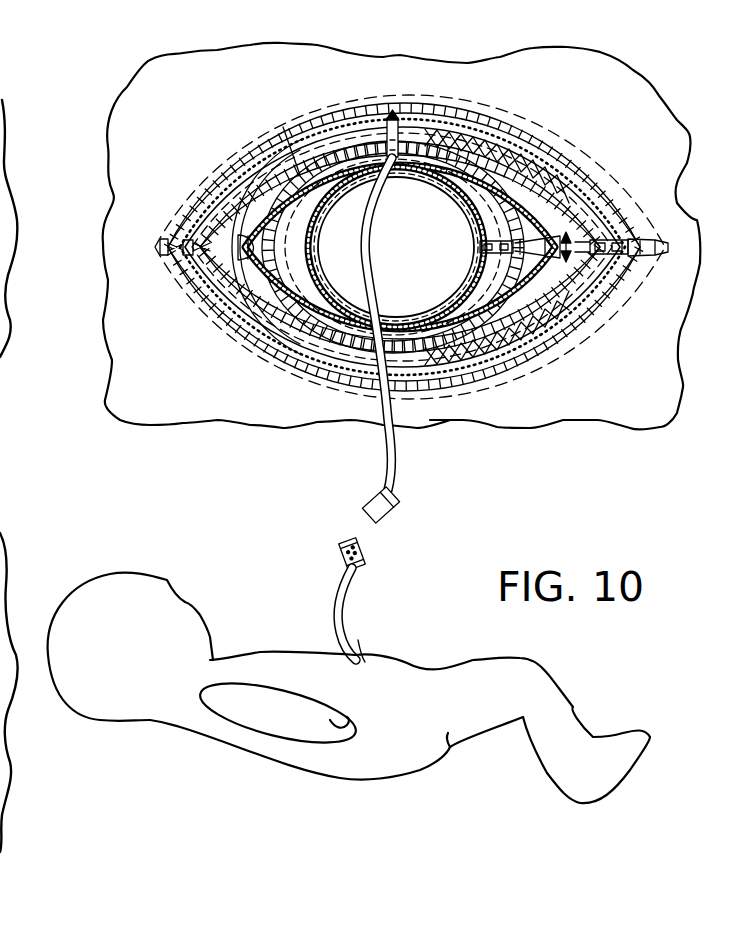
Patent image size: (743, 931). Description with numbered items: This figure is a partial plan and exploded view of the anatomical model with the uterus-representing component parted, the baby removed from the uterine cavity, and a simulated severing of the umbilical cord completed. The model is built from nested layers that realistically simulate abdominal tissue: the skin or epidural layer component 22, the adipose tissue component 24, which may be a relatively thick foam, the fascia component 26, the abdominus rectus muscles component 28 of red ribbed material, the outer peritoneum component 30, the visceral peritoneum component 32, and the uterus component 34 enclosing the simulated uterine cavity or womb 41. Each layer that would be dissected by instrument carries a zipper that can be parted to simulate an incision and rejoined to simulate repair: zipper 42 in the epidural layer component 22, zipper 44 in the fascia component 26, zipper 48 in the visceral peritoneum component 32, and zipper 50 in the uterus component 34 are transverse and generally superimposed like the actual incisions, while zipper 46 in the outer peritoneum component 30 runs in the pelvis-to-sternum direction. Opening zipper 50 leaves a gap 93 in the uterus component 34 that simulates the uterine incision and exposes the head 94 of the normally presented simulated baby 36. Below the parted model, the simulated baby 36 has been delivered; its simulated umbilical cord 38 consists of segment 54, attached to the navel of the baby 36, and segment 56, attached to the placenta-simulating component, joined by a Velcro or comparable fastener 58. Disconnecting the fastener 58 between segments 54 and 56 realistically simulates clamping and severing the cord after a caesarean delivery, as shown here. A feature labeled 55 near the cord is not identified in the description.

The skin or epidural layer component 22 is at (173, 100).
The adipose tissue component 24 is at (495, 120).
The fascia component 26 is at (520, 145).
The abdominus rectus muscles component 28 is at (185, 205).
The outer peritoneum component 30 is at (575, 320).
The visceral peritoneum component 32 is at (555, 345).
The uterus component 34 is at (520, 375).
The simulated baby 36 is at (349, 694).
The simulated umbilical cord 38 is at (363, 461).
The simulated uterine cavity or womb 41 is at (421, 291).
The zipper 42 is at (668, 238).
The zipper 44 is at (615, 215).
The zipper 46 is at (388, 117).
The zipper 48 is at (580, 165).
The zipper 50 is at (480, 245).
The umbilical cord segment 54 is at (335, 627).
The tube entry point 55 is at (365, 655).
The umbilical cord segment 56 is at (405, 445).
The Velcro fastener 58 is at (368, 555).
The gap 93 is at (283, 127).
The head 94 is at (105, 577).